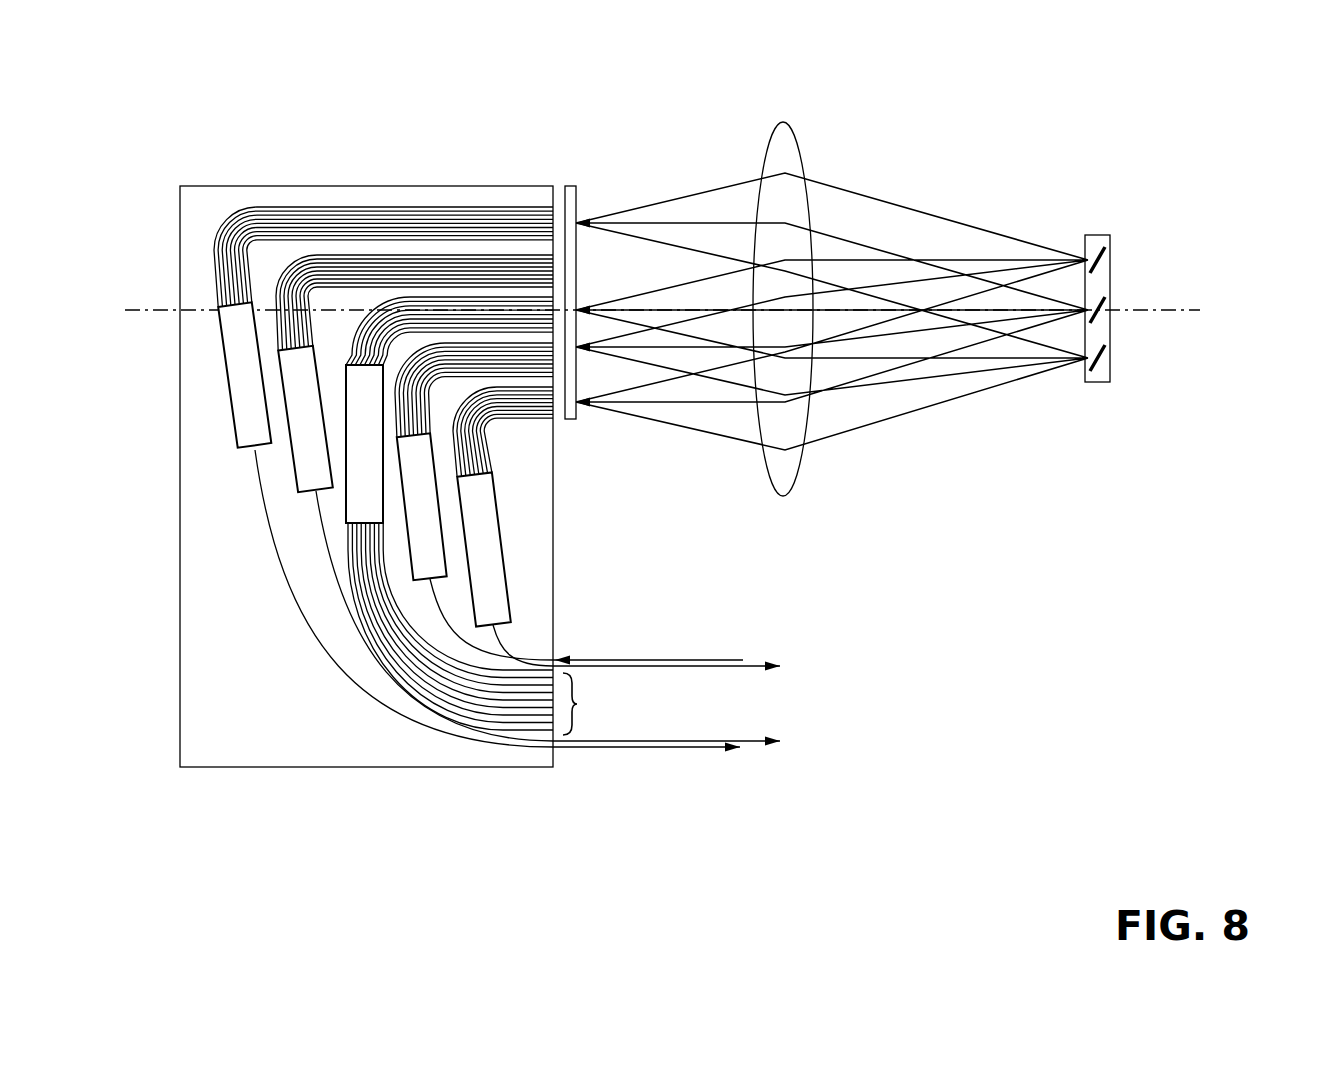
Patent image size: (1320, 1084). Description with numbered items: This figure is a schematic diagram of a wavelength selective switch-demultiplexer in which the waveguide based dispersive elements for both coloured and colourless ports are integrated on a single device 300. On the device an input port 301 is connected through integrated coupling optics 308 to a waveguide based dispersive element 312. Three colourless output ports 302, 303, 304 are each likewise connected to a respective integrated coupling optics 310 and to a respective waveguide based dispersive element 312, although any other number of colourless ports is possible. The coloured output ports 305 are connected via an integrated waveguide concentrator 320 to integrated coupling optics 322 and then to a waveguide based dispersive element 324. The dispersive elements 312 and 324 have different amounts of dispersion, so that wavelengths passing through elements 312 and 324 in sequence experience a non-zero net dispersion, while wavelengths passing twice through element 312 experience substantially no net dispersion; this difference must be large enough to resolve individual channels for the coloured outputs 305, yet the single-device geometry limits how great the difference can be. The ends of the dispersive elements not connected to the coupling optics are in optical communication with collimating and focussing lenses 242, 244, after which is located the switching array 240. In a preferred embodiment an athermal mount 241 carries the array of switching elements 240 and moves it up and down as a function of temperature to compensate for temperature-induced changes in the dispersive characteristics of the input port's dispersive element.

The device 300 is at (223, 195).
The waveguide based dispersive element 312 is at (381, 349).
The waveguide based dispersive element 324 is at (449, 244).
The integrated waveguide concentrator 320 is at (409, 626).
The integrated coupling optics 310 is at (307, 418).
The integrated coupling optics 322 is at (365, 497).
The integrated coupling optics 308 is at (485, 587).
The input port 301 is at (683, 658).
The colourless output port 302 is at (755, 661).
The colourless output port 303 is at (755, 740).
The colourless output port 304 is at (688, 750).
The coloured output ports 305 is at (664, 704).
The collimating and focussing lens 242 is at (570, 195).
The collimating and focussing lens 244 is at (788, 143).
The switching array 240 is at (1108, 345).
The athermal mount 241 is at (1098, 383).